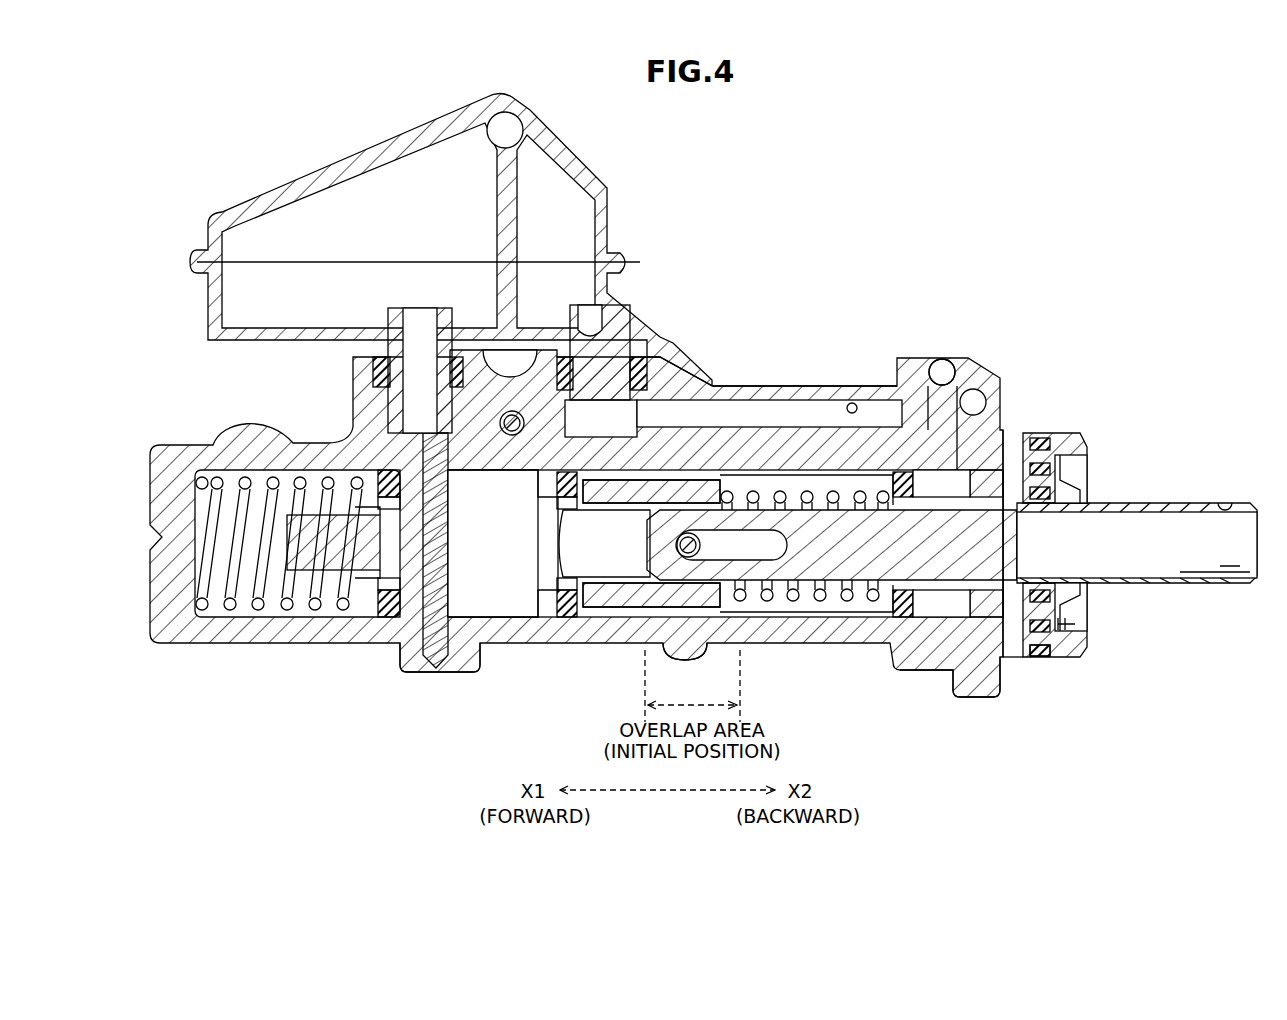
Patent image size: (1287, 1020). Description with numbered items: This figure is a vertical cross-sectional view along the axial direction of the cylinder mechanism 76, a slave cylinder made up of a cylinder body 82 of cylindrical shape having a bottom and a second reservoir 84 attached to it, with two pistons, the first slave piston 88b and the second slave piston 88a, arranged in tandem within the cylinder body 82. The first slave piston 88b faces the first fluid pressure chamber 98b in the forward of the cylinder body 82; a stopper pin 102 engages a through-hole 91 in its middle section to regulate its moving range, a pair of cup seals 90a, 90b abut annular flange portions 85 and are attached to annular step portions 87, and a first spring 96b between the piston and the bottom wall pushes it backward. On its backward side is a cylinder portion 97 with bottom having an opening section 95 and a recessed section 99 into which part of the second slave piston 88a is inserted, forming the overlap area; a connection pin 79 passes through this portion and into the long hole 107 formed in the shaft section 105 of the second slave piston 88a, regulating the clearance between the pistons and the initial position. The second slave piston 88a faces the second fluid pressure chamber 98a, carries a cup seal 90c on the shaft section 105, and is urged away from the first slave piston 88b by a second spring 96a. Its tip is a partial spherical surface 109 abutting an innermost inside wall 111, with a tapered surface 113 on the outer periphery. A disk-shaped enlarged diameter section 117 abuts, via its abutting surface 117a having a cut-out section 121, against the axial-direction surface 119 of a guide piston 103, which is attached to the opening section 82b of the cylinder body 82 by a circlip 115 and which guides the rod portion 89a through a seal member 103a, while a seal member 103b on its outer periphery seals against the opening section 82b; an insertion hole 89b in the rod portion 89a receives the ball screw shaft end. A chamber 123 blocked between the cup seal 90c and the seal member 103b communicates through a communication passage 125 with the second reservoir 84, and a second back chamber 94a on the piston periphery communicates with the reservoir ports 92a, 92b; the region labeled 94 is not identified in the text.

The cylinder mechanism 76 is at (885, 243).
The connection pin 79 is at (690, 480).
The cylinder body 82 is at (318, 645).
The opening section 82b is at (1008, 643).
The second reservoir 84 is at (585, 150).
The annular flange portions 85 is at (403, 618).
The annular step portions 87 is at (373, 608).
The second slave piston 88a is at (948, 600).
The first slave piston 88b is at (655, 470).
The rod portion 89a is at (1198, 503).
The insertion hole 89b is at (1240, 505).
The cup seal 90a is at (583, 620).
The cup seal 90b is at (385, 620).
The cup seal 90c is at (900, 618).
The through-hole 91 is at (540, 560).
The reservoir port 92a is at (630, 360).
The reservoir port 92b is at (367, 350).
The piston portion 94 is at (489, 592).
The second back chamber 94a is at (940, 488).
The opening section 95 is at (722, 480).
The second spring 96a is at (840, 600).
The first spring 96b is at (263, 622).
The cylinder portion with bottom 97 is at (645, 470).
The second fluid pressure chamber 98a is at (805, 490).
The first fluid pressure chamber 98b is at (233, 487).
The recessed section 99 is at (610, 612).
The stopper pin 102 is at (440, 662).
The guide piston 103 is at (1082, 466).
The seal member 103a is at (1057, 488).
The seal member 103b is at (1055, 463).
The shaft section 105 is at (790, 592).
The long hole 107 is at (775, 525).
The partial spherical surface 109 is at (643, 550).
The innermost inside wall 111 is at (540, 528).
The tapered surface 113 is at (678, 662).
The circlip 115 is at (1076, 624).
The enlarged diameter section 117 is at (983, 700).
The abutting surface 117a is at (1040, 656).
The axial-direction surface 119 is at (1013, 473).
The cut-out section 121 is at (1032, 470).
The chamber 123 is at (977, 493).
The communication passage 125 is at (855, 403).